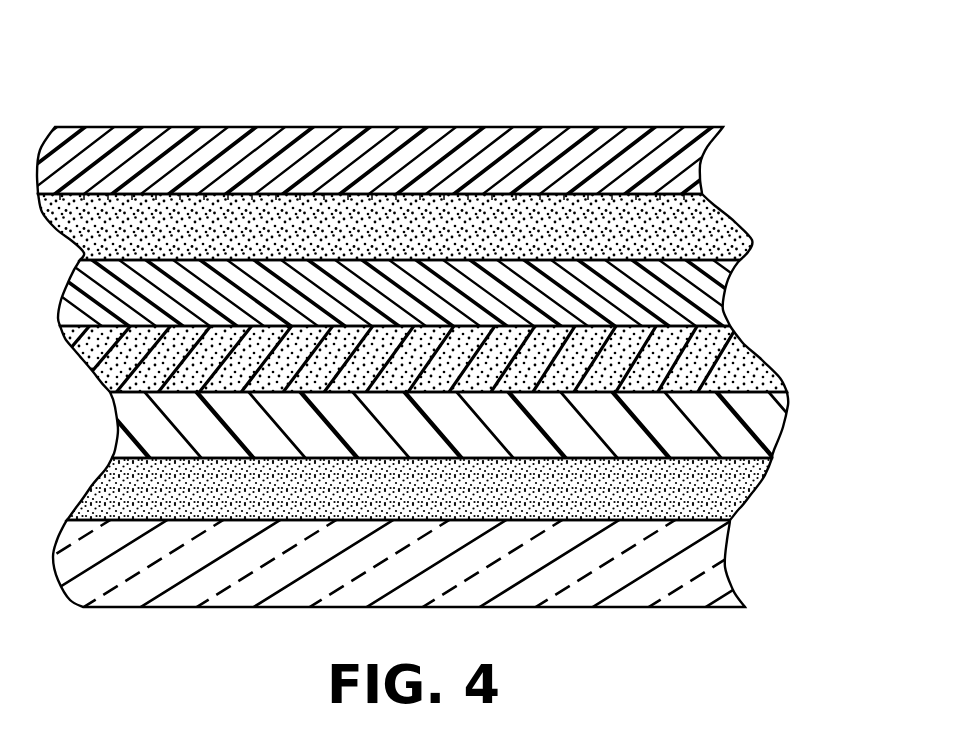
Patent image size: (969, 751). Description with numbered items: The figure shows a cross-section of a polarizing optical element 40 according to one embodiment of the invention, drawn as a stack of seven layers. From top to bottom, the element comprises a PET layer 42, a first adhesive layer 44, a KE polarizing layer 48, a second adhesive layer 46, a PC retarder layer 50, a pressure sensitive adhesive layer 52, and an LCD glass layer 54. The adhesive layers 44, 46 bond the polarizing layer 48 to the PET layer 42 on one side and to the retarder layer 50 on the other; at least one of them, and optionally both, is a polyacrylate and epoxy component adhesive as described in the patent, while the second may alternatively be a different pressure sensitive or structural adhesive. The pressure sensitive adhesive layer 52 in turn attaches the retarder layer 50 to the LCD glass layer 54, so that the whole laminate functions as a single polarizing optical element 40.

The polarizing optical element 40 is at (600, 104).
The PET layer 42 is at (687, 163).
The adhesive layer 44 is at (727, 217).
The adhesive layer 46 is at (743, 355).
The KE polarizing layer 48 is at (717, 282).
The PC retarder layer 50 is at (763, 428).
The pressure sensitive adhesive layer 52 is at (747, 487).
The LCD glass layer 54 is at (720, 572).